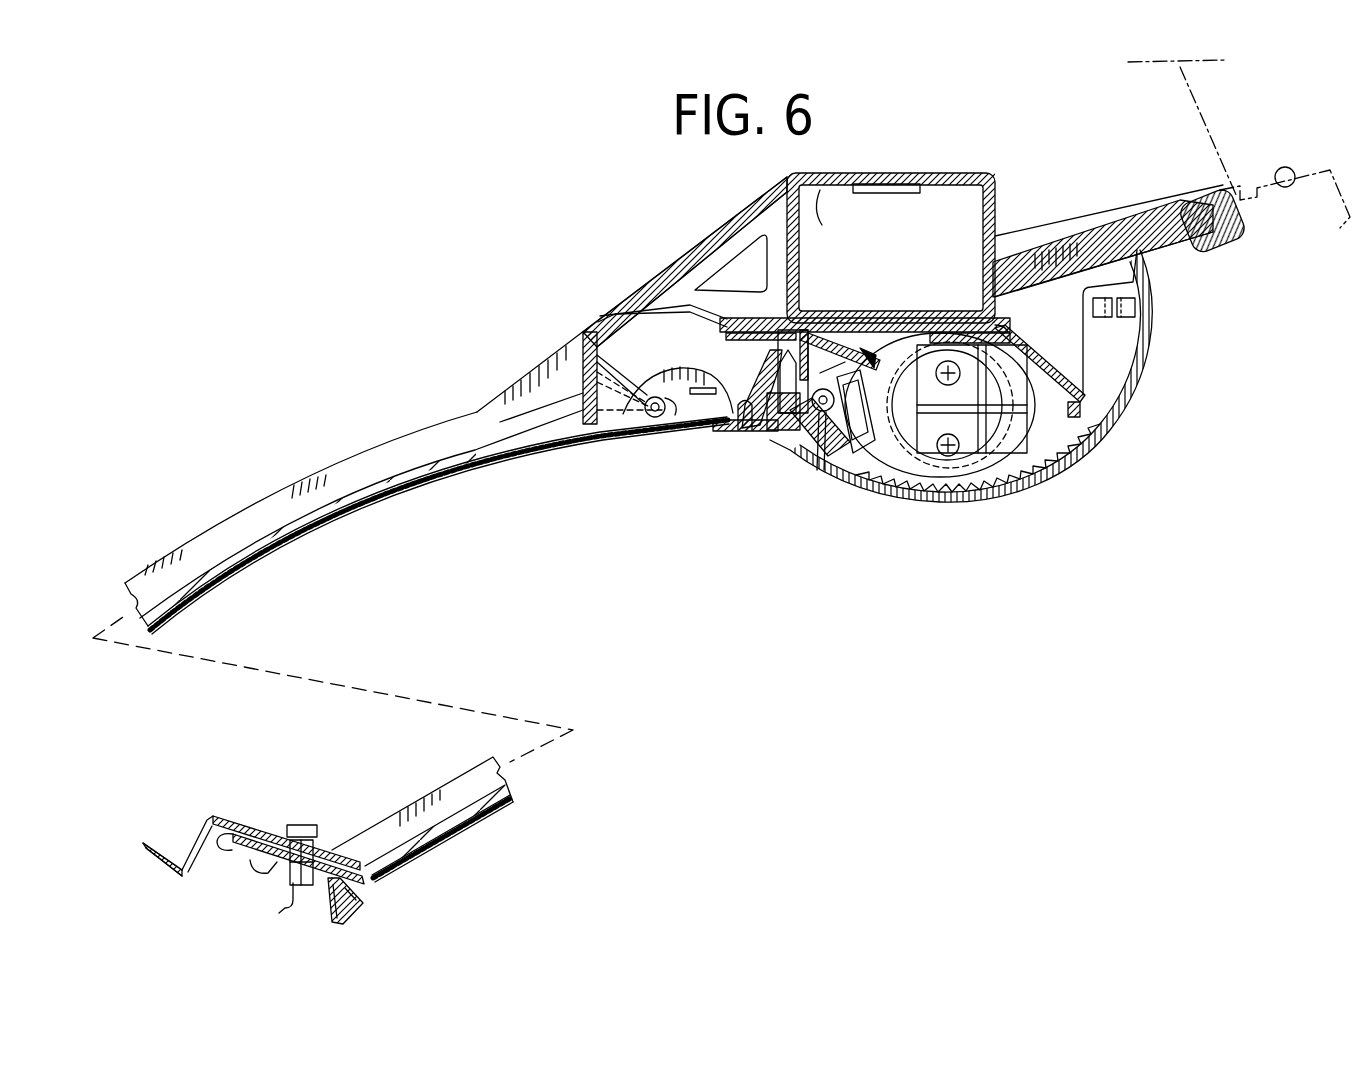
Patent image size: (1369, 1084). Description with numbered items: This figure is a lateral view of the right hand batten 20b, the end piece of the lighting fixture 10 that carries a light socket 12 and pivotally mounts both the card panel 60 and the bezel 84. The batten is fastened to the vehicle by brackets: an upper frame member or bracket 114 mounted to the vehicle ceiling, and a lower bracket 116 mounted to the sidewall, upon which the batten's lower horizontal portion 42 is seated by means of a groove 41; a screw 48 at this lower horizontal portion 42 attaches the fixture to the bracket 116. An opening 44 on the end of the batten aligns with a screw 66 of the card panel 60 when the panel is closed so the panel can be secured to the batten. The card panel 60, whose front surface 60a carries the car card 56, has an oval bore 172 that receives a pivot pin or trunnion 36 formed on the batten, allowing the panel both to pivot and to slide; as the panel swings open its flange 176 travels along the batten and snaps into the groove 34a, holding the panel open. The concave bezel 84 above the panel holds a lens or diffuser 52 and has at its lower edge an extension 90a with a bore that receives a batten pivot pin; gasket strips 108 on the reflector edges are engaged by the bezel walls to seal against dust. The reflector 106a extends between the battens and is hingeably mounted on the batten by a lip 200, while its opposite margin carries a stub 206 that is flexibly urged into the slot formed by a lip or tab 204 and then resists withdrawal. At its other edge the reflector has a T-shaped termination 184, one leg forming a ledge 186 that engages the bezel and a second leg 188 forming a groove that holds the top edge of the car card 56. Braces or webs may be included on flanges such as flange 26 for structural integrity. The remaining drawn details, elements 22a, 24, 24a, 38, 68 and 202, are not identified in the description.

The lighting fixture 10 is at (345, 413).
The light socket 12 is at (1030, 408).
The right hand batten 20b is at (243, 502).
The pivot pin 22a is at (819, 430).
The header housing 24 is at (824, 215).
The housing wall 24a is at (936, 205).
The flange 26 is at (1060, 445).
The groove 34a is at (560, 362).
The pivot pin 36 is at (660, 396).
The lip 38 is at (545, 409).
The groove 41 is at (262, 835).
The lower horizontal portion 42 is at (225, 815).
The opening 44 is at (305, 830).
The screw 48 is at (258, 872).
The lens or diffuser 52 is at (965, 488).
The car card 56 is at (480, 820).
The card panel 60 is at (305, 545).
The front surface 60a is at (402, 491).
The screw 66 is at (283, 912).
The end cap 68 is at (362, 912).
The bezel 84 is at (1122, 420).
The extension 90a is at (840, 455).
The reflector 106a is at (855, 345).
The gasket strip 108 is at (1085, 368).
The bracket 114 is at (1283, 167).
The bracket 116 is at (188, 885).
The bore 172 is at (663, 420).
The flange 176 is at (712, 435).
The T-shaped termination 184 is at (728, 435).
The ledge 186 is at (768, 432).
The leg 188 is at (738, 433).
The lip 200 is at (1010, 325).
The plate 202 is at (770, 330).
The tab 204 is at (735, 343).
The stub 206 is at (685, 300).